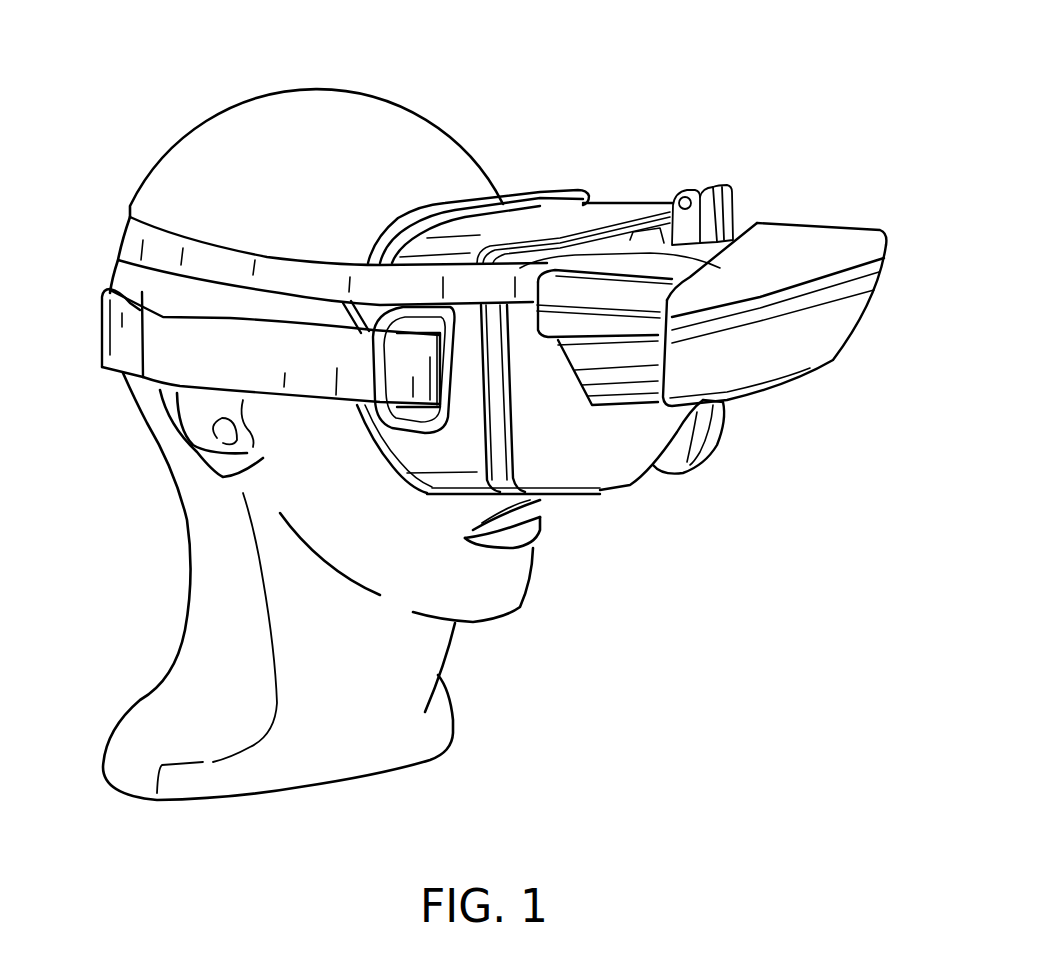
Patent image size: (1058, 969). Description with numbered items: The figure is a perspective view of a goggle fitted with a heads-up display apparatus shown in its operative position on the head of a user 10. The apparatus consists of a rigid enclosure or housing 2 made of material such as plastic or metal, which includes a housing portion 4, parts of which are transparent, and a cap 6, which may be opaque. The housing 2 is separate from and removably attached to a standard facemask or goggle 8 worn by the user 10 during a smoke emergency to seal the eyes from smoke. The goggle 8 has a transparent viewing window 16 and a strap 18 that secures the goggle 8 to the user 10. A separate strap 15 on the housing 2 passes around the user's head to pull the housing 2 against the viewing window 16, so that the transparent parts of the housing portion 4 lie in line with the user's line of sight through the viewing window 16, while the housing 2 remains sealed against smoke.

The housing 2 is at (742, 257).
The housing portion 4 is at (838, 355).
The cap 6 is at (893, 243).
The goggle 8 is at (533, 311).
The user 10 is at (208, 132).
The strap 15 is at (117, 237).
The transparent viewing window 16 is at (587, 483).
The strap 18 is at (130, 367).